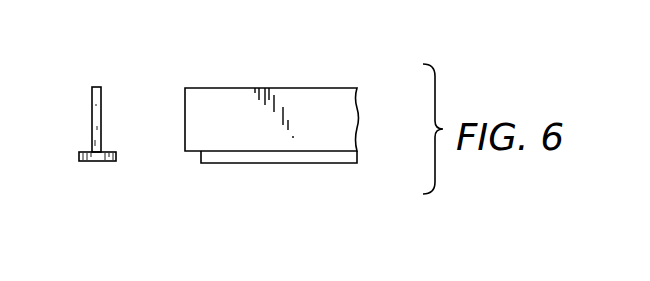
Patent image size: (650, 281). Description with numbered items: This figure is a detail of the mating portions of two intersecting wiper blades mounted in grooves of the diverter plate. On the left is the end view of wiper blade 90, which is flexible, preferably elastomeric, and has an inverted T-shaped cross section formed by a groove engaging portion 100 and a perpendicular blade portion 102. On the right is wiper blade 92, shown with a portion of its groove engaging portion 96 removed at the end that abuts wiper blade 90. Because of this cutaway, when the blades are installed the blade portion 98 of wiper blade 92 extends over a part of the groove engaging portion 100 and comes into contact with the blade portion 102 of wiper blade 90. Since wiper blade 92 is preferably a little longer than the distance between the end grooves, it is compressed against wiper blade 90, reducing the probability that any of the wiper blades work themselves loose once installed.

The wiper blade 90 is at (87, 124).
The blade portion 102 is at (96, 113).
The groove engaging portion 100 is at (109, 161).
The wiper blade 92 is at (272, 126).
The blade portion 98 is at (310, 103).
The groove engaging portion 96 is at (268, 158).